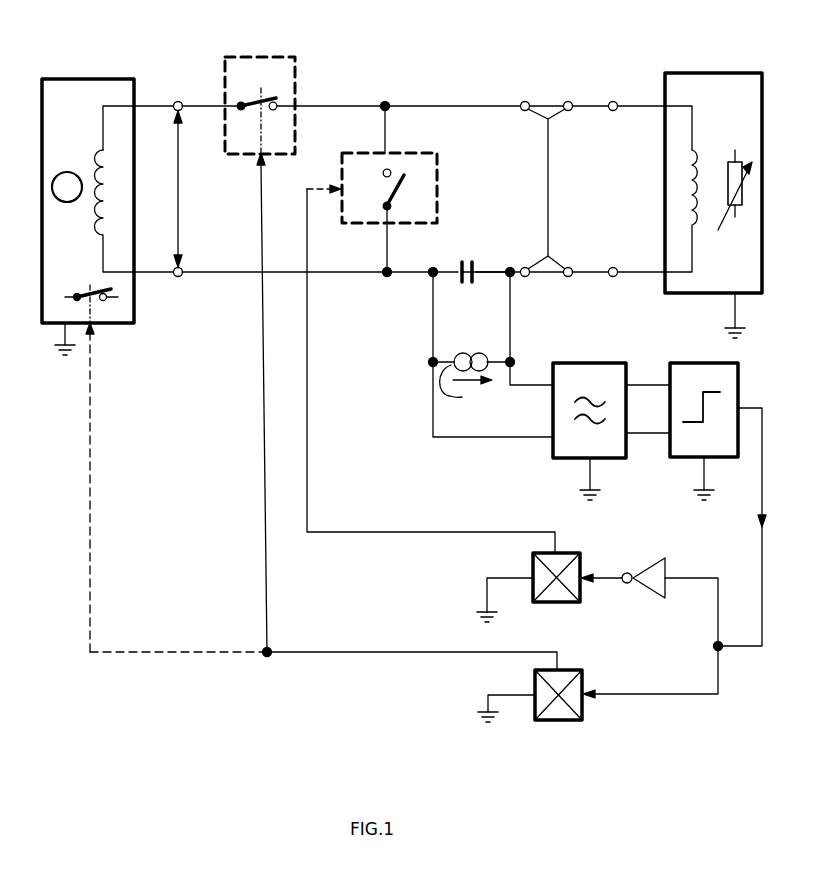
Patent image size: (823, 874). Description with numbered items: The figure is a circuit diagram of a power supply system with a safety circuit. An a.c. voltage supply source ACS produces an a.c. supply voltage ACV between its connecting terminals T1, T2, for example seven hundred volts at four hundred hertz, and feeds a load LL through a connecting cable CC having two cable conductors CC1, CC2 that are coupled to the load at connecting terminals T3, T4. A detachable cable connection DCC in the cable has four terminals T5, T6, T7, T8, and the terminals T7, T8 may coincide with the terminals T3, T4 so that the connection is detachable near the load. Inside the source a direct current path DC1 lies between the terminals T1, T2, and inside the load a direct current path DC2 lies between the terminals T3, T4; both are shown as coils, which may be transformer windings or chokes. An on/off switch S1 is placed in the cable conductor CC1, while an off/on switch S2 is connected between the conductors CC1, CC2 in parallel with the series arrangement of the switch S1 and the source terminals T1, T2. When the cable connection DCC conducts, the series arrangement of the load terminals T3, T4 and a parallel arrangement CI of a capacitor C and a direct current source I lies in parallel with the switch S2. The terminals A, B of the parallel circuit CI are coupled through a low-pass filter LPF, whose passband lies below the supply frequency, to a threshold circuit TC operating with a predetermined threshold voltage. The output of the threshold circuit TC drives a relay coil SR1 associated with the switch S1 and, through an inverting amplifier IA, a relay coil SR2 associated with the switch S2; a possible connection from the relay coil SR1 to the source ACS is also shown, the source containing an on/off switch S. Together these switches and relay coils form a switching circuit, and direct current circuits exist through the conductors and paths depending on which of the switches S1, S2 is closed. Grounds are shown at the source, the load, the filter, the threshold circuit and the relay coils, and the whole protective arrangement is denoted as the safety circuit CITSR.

The a.c. voltage supply source ACS is at (100, 79).
The direct current path DC1 is at (102, 152).
The on/off switch S is at (86, 293).
The connecting terminal T1 is at (178, 101).
The connecting terminal T2 is at (178, 277).
The a.c. supply voltage ACV is at (180, 192).
The cable conductor CC1 is at (212, 107).
The connecting cable CC is at (433, 89).
The on/off switch S1 is at (263, 56).
The off/on switch S2 is at (438, 184).
The terminal T5 is at (523, 101).
The terminal T7 is at (569, 101).
The connecting terminal T3 is at (614, 101).
The detachable cable connection DCC is at (553, 179).
The load LL is at (705, 73).
The direct current path DC2 is at (718, 218).
The cable conductor CC2 is at (384, 268).
The terminal A is at (436, 267).
The capacitor C is at (473, 255).
The terminal B is at (513, 267).
The terminal T6 is at (525, 277).
The terminal T8 is at (568, 277).
The connecting terminal T4 is at (614, 277).
The parallel arrangement CI is at (474, 327).
The direct current source I is at (469, 385).
The low-pass filter LPF is at (604, 363).
The threshold circuit TC is at (709, 363).
The inverting amplifier IA is at (642, 573).
The relay coil SR2 is at (562, 603).
The relay coil SR1 is at (566, 722).
The safety circuit CITSR is at (436, 488).